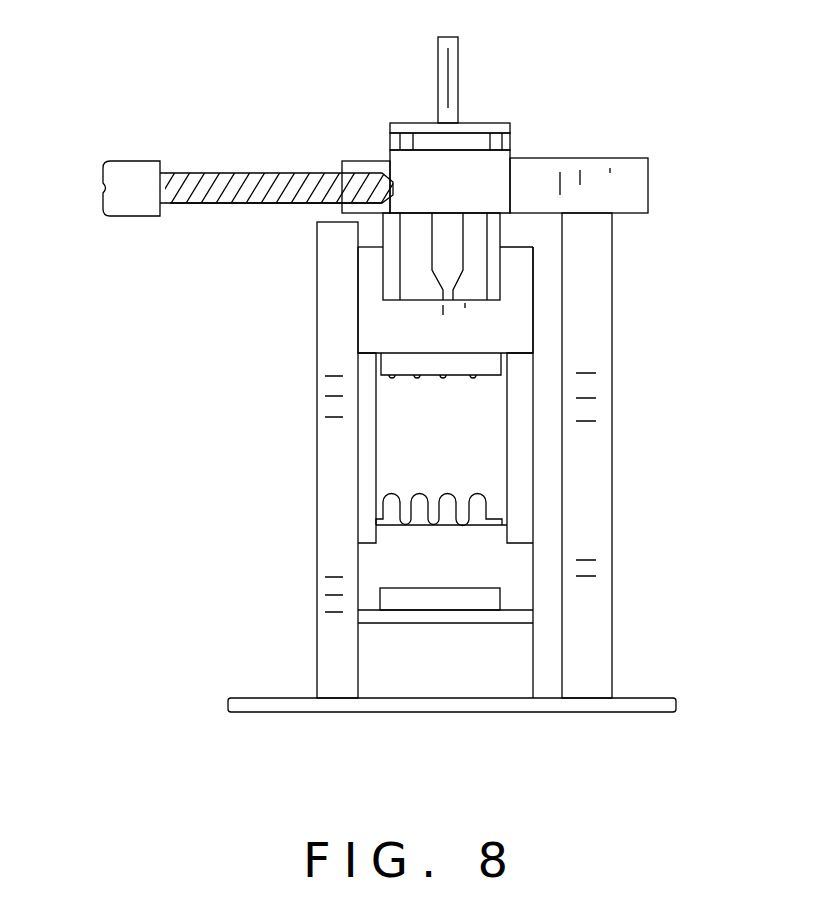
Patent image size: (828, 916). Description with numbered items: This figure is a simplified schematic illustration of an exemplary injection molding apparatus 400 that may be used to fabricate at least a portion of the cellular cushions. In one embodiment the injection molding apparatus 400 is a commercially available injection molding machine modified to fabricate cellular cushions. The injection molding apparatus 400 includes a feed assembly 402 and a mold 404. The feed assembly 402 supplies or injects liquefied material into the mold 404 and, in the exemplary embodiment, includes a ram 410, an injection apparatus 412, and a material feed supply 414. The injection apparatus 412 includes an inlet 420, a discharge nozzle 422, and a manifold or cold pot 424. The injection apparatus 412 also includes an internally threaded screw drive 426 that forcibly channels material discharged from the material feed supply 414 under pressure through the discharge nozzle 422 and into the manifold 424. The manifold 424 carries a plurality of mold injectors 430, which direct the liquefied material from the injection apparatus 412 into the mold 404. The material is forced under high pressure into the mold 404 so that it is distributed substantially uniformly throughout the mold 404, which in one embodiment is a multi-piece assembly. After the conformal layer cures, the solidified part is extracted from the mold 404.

The injection molding apparatus 400 is at (140, 85).
The feed assembly 402 is at (530, 158).
The mold 404 is at (490, 512).
The ram 410 is at (390, 127).
The injection apparatus 412 is at (292, 170).
The material feed supply 414 is at (125, 152).
The inlet 420 is at (352, 160).
The discharge nozzle 422 is at (453, 290).
The manifold 424 is at (493, 323).
The internally threaded screw drive 426 is at (253, 205).
The mold injectors 430 is at (440, 387).